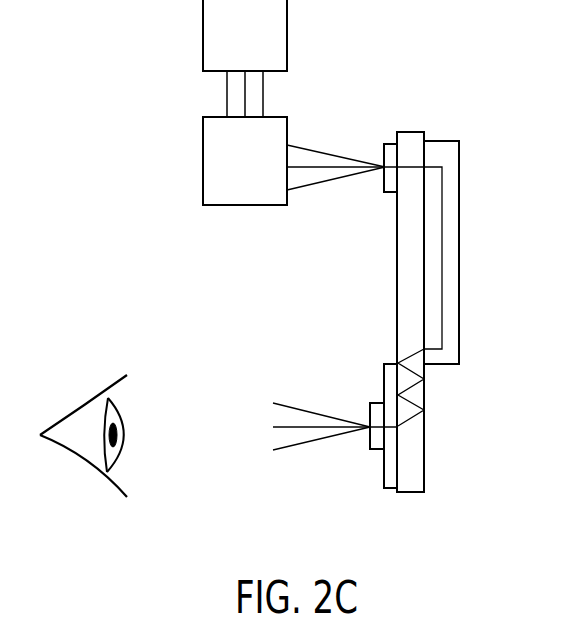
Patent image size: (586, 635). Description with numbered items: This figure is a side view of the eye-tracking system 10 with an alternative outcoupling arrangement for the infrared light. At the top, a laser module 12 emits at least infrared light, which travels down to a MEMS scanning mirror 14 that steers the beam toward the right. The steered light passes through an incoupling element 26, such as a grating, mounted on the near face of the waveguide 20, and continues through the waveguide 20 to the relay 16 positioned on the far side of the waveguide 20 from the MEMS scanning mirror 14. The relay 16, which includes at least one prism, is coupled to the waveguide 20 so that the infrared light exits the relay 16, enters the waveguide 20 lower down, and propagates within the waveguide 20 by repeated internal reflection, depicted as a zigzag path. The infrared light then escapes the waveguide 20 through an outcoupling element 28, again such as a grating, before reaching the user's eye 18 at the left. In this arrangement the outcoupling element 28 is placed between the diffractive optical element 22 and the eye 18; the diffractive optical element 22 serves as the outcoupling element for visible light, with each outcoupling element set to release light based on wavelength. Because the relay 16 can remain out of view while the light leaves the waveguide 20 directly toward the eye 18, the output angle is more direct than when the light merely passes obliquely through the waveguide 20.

The eye-tracking system 10 is at (98, 188).
The laser module 12 is at (253, 53).
The MEMS scanning mirror 14 is at (253, 185).
The relay 16 is at (440, 138).
The eye 18 is at (80, 457).
The waveguide 20 is at (412, 132).
The diffractive optical element 22 is at (391, 488).
The incoupling element 26 is at (388, 147).
The outcoupling element 28 is at (380, 449).